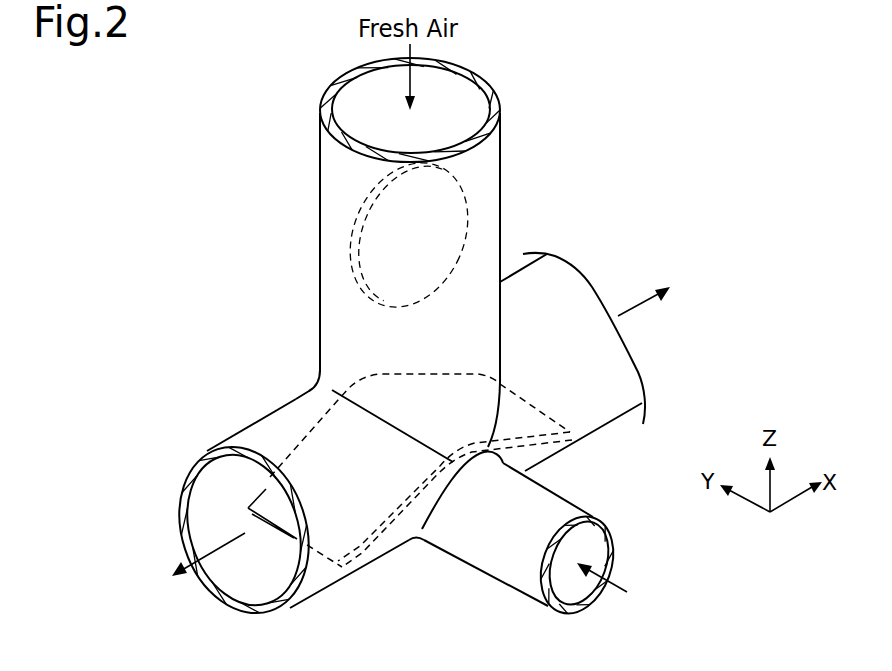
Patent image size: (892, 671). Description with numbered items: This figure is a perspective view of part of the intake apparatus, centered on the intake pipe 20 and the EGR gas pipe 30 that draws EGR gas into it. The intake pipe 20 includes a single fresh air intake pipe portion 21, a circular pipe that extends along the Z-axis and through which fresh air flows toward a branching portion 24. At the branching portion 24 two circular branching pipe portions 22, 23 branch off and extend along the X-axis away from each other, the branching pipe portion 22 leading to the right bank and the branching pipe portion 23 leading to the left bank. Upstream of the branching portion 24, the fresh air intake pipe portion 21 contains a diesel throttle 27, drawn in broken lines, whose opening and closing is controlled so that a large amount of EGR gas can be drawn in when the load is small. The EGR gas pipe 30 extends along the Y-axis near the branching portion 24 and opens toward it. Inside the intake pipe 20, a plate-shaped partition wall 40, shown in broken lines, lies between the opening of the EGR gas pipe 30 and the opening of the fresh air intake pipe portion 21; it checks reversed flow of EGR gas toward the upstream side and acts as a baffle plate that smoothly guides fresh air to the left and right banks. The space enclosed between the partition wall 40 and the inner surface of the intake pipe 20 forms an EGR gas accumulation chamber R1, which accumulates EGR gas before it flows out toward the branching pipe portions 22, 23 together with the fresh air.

The intake pipe 20 is at (501, 181).
The fresh air intake pipe portion 21 is at (501, 222).
The branching pipe portion 22 is at (622, 417).
The branching pipe portion 23 is at (330, 591).
The branching portion 24 is at (350, 380).
The diesel throttle 27 is at (440, 278).
The EGR gas pipe 30 is at (576, 505).
The partition wall 40 is at (381, 375).
The EGR gas accumulation chamber R1 is at (415, 541).